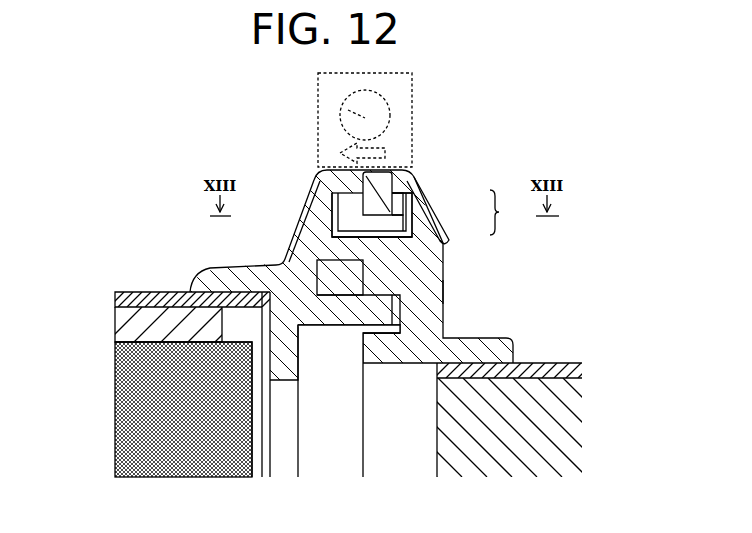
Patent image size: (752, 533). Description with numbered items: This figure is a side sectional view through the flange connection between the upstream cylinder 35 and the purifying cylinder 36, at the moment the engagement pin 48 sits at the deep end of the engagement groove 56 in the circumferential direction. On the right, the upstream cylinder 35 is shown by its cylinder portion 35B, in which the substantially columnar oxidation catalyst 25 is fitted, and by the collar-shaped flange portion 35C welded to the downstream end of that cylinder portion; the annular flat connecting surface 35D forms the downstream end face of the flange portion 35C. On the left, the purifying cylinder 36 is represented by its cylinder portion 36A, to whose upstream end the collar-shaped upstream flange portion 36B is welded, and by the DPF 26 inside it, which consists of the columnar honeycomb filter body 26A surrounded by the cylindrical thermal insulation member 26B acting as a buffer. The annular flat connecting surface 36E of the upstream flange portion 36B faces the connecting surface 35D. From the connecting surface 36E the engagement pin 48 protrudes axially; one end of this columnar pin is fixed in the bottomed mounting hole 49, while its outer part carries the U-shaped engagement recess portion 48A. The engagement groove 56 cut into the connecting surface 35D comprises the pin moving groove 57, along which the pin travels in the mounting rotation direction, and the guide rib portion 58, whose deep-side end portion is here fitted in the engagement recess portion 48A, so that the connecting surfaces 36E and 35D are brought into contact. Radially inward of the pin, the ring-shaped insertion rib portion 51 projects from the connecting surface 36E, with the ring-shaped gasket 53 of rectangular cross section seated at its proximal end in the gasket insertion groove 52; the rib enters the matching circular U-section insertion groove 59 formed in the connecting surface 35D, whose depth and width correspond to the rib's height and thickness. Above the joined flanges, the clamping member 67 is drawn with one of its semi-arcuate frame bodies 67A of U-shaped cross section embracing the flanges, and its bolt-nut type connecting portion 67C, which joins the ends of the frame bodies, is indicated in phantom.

The oxidation catalyst 25 is at (545, 430).
The DPF 26 is at (47, 308).
The filter body 26A is at (130, 358).
The thermal insulation member 26B is at (130, 325).
The upstream cylinder 35 is at (537, 297).
The cylinder portion 35B is at (548, 363).
The flange portion 35C is at (444, 285).
The connecting surface 35D is at (444, 295).
The purifying cylinder 36 is at (158, 277).
The cylinder portion 36A is at (134, 289).
The upstream flange portion 36B is at (316, 172).
The connecting surface 36E is at (333, 233).
The engagement pin 48 is at (342, 206).
The engagement recess portion 48A is at (413, 250).
The mounting hole 49 is at (330, 189).
The insertion rib portion 51 is at (360, 320).
The gasket insertion groove 52 is at (322, 246).
The gasket 53 is at (340, 282).
The engagement groove 56 is at (509, 212).
The pin moving groove 57 is at (400, 223).
The guide rib portion 58 is at (398, 198).
The insertion groove 59 is at (398, 320).
The clamping member 67 is at (414, 101).
The frame body 67A is at (422, 180).
The connecting portion 67C is at (343, 112).